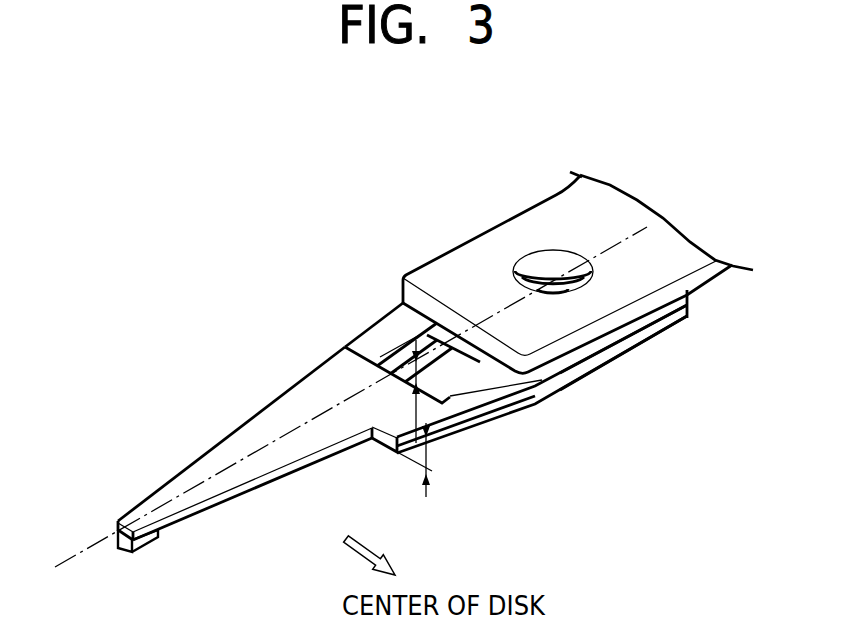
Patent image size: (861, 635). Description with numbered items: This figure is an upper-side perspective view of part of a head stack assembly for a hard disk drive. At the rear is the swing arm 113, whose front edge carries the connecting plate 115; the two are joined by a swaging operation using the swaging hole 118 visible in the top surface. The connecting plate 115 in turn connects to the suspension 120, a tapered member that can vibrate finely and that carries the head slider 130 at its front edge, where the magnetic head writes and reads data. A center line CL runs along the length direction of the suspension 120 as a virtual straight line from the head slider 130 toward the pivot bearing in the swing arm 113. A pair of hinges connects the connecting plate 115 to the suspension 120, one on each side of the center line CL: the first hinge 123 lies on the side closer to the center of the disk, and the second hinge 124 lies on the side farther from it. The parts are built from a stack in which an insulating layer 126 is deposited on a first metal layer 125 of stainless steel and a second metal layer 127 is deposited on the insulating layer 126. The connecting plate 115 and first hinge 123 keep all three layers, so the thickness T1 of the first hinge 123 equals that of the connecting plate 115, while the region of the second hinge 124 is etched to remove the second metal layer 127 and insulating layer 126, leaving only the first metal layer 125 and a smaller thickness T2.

The swing arm 113 is at (568, 197).
The connecting plate 115 is at (686, 335).
The swaging hole 118 is at (531, 254).
The suspension 120 is at (258, 422).
The first hinge 123 is at (484, 408).
The second hinge 124 is at (377, 322).
The first metal layer 125 is at (452, 327).
The insulating layer 126 is at (612, 346).
The second metal layer 127 is at (655, 337).
The head slider 130 is at (136, 545).
The thickness of the first hinge T1 is at (429, 460).
The thickness of the second hinge T2 is at (401, 391).
The center line CL is at (80, 557).